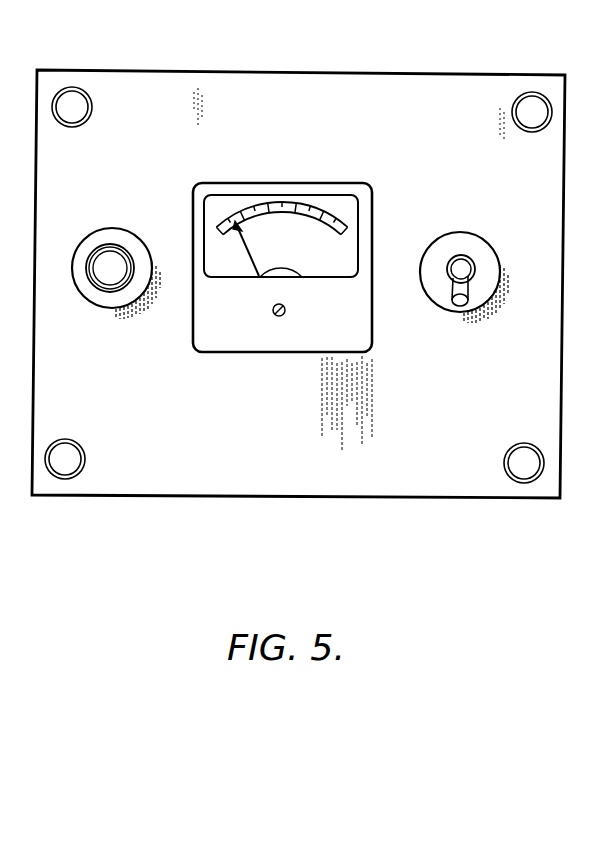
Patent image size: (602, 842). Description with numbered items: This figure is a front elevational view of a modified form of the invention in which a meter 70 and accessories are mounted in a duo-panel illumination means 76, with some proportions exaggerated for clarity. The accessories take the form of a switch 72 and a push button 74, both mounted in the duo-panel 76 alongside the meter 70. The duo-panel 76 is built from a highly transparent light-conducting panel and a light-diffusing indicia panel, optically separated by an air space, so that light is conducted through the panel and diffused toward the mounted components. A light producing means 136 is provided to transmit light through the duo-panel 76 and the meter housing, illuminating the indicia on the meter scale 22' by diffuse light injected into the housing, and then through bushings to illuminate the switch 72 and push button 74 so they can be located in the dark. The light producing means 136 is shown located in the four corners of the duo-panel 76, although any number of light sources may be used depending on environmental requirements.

The duo-panel illumination means 76 is at (312, 70).
The meter 70 is at (376, 221).
The voltmeter scale 22' is at (283, 214).
The push button 74 is at (128, 227).
The switch 72 is at (494, 245).
The light producing means 136 is at (506, 448).